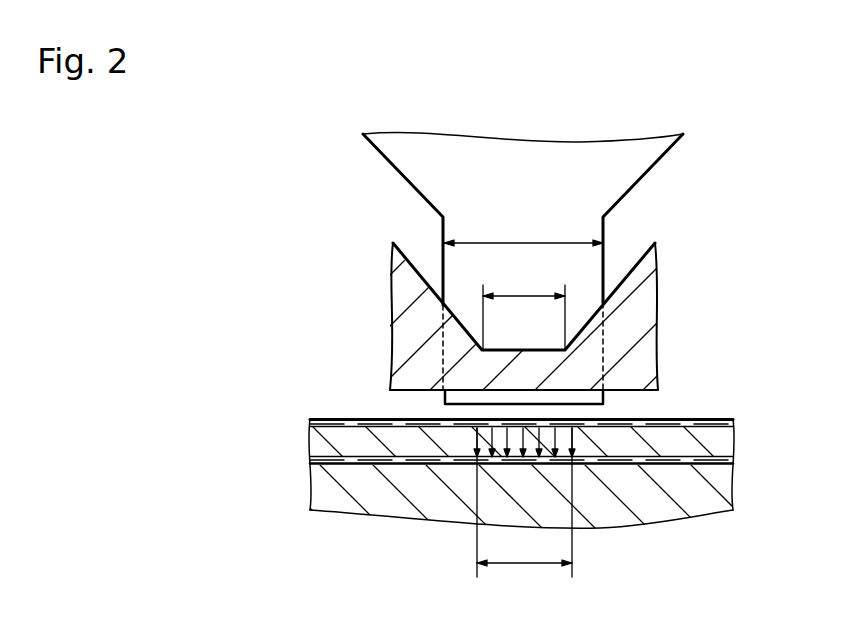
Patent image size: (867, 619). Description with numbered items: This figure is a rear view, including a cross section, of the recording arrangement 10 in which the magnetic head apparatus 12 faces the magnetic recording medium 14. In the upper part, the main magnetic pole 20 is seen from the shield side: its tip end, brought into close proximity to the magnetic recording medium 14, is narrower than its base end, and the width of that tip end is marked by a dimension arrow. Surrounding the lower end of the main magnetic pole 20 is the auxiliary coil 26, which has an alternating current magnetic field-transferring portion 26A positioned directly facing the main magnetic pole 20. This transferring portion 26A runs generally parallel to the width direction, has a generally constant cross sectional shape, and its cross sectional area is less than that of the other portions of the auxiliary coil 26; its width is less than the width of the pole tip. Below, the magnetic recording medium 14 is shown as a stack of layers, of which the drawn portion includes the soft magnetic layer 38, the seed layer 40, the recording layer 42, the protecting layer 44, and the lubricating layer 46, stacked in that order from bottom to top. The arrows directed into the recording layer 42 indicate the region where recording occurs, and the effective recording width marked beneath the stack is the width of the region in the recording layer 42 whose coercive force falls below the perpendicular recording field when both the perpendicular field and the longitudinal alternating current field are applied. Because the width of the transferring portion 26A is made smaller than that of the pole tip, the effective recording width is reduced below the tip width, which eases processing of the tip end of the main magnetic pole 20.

The deposition apparatus 10 is at (520, 84).
The magnetic head apparatus 12 is at (298, 307).
The magnetic recording medium 14 is at (294, 462).
The main magnetic pole 20 is at (604, 246).
The auxiliary coil 26 is at (391, 306).
The alternating current magnetic field-transferring portion 26A is at (483, 346).
The soft magnetic layer 38 is at (735, 492).
The seed layer 40 is at (735, 466).
The recording layer 42 is at (735, 453).
The protecting layer 44 is at (735, 427).
The lubricating layer 46 is at (738, 418).